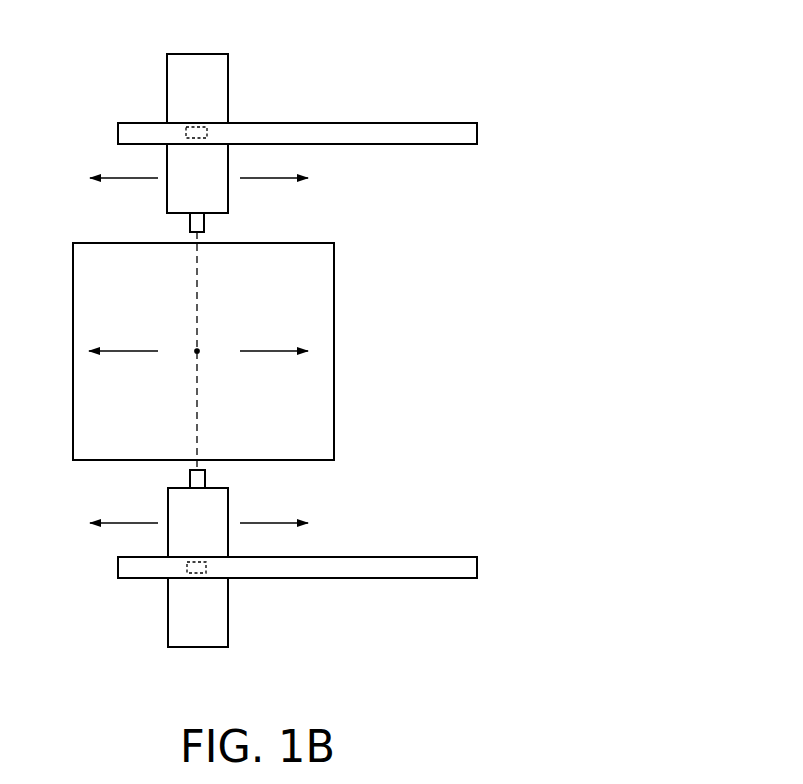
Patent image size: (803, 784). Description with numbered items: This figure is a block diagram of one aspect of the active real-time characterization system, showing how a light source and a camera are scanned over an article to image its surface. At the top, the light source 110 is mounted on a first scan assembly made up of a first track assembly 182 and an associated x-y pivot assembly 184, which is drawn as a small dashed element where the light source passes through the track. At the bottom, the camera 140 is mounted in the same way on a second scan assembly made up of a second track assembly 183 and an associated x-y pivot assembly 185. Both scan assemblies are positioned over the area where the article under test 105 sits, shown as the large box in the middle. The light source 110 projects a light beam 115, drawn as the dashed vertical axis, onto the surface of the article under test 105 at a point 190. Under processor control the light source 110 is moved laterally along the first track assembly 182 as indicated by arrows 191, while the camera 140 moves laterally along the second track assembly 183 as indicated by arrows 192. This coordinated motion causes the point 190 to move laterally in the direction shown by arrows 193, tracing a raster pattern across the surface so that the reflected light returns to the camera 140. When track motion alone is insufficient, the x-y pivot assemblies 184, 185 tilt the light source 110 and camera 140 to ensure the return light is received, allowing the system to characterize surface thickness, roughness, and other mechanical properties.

The light source 110 is at (207, 54).
The first track assembly 182 is at (433, 123).
The x-y pivot assembly 184 is at (208, 136).
The arrows 191 is at (128, 178).
The article under test 105 is at (337, 290).
The light beam 115 is at (196, 275).
The point 190 is at (197, 350).
The arrows 193 is at (125, 352).
The arrows 192 is at (132, 523).
The camera 140 is at (205, 648).
The second track assembly 183 is at (407, 558).
The x-y pivot assembly 185 is at (207, 567).